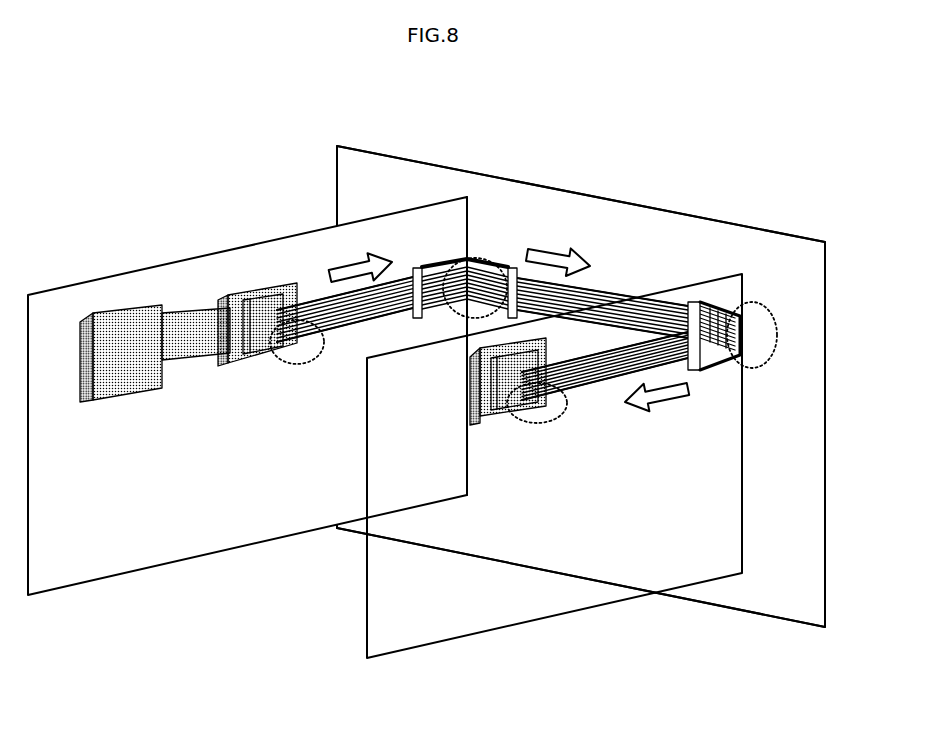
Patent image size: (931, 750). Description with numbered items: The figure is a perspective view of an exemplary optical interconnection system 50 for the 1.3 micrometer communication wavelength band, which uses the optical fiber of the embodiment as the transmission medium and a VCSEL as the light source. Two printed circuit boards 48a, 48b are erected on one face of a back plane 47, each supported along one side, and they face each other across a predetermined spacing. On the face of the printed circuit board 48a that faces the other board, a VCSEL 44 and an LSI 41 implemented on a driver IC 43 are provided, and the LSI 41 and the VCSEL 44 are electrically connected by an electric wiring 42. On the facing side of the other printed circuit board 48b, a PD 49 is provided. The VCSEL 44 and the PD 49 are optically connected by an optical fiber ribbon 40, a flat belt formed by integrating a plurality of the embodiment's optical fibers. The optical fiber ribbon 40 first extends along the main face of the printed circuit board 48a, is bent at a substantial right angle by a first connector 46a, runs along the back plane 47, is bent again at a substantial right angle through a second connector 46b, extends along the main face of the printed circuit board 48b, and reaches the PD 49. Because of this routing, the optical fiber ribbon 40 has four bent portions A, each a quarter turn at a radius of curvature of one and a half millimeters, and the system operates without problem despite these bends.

The optical fiber ribbon 40 is at (323, 297).
The LSI 41 is at (122, 307).
The electric wiring 42 is at (195, 307).
The driver IC 43 is at (243, 297).
The VCSEL 44 is at (296, 290).
The first connector 46a is at (445, 268).
The second connector 46b is at (736, 303).
The back plane 47 is at (783, 265).
The printed circuit board 48a is at (106, 555).
The printed circuit board 48b is at (393, 633).
The PD 49 is at (491, 423).
The optical interconnection system 50 is at (486, 145).
The bent portion A is at (481, 258).